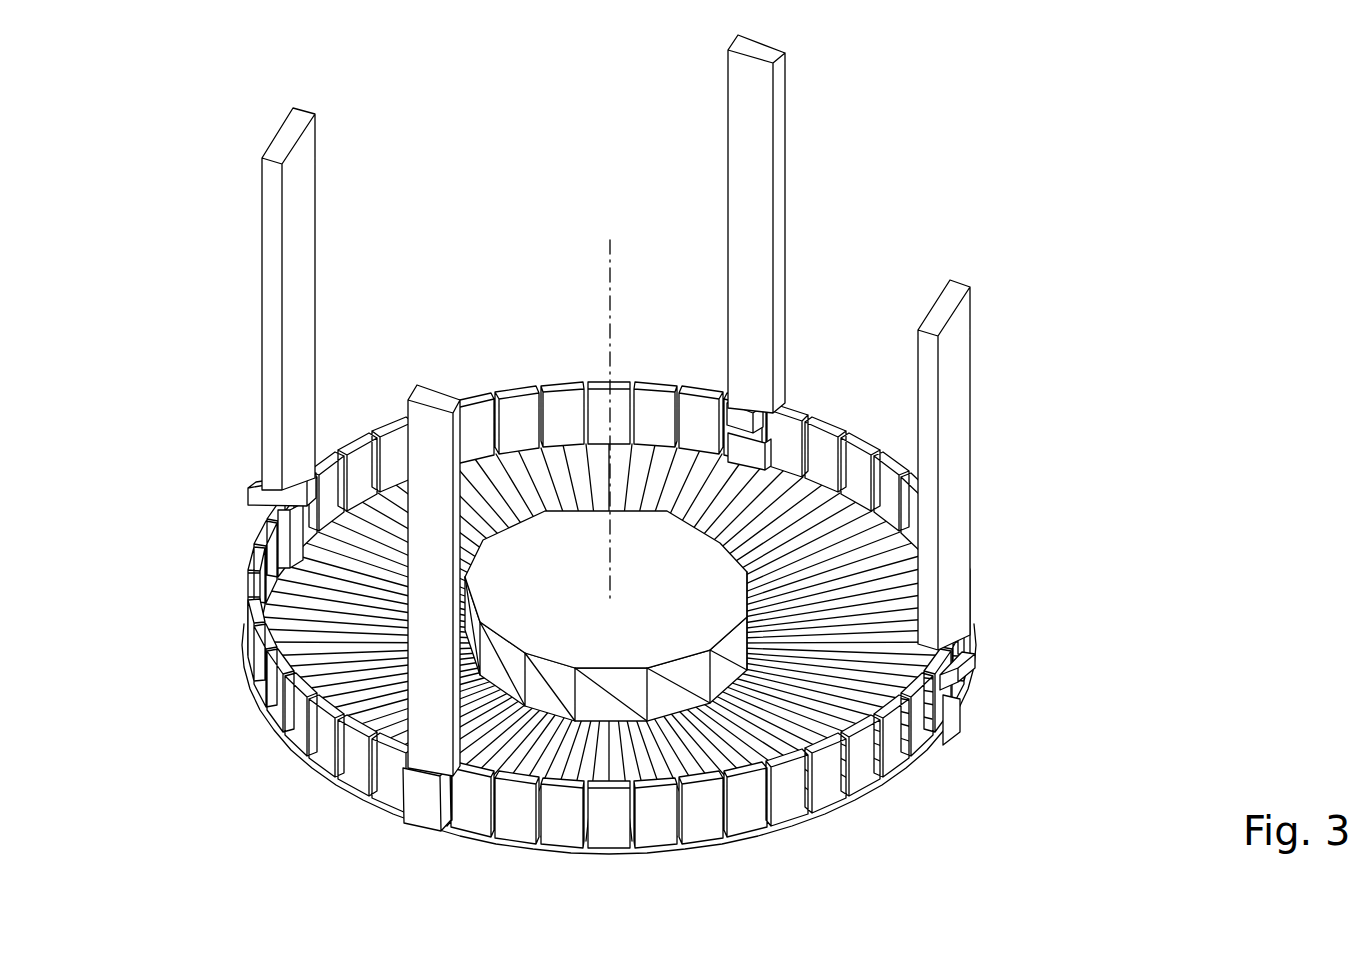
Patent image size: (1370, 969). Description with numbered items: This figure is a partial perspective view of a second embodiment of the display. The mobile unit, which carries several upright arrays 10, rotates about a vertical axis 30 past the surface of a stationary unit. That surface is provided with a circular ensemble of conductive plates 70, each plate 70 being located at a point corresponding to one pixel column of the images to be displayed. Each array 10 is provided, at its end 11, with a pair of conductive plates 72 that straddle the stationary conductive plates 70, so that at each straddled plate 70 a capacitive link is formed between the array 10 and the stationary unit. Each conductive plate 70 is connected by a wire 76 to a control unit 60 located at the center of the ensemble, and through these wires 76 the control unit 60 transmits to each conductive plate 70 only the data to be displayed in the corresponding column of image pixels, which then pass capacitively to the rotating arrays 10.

The array 10 is at (313, 213).
The end of array 11 is at (298, 455).
The axis 30 is at (600, 318).
The control unit 60 is at (672, 586).
The conductive plate 70 is at (342, 780).
The conductive plate 72 is at (345, 432).
The wire 76 is at (863, 530).